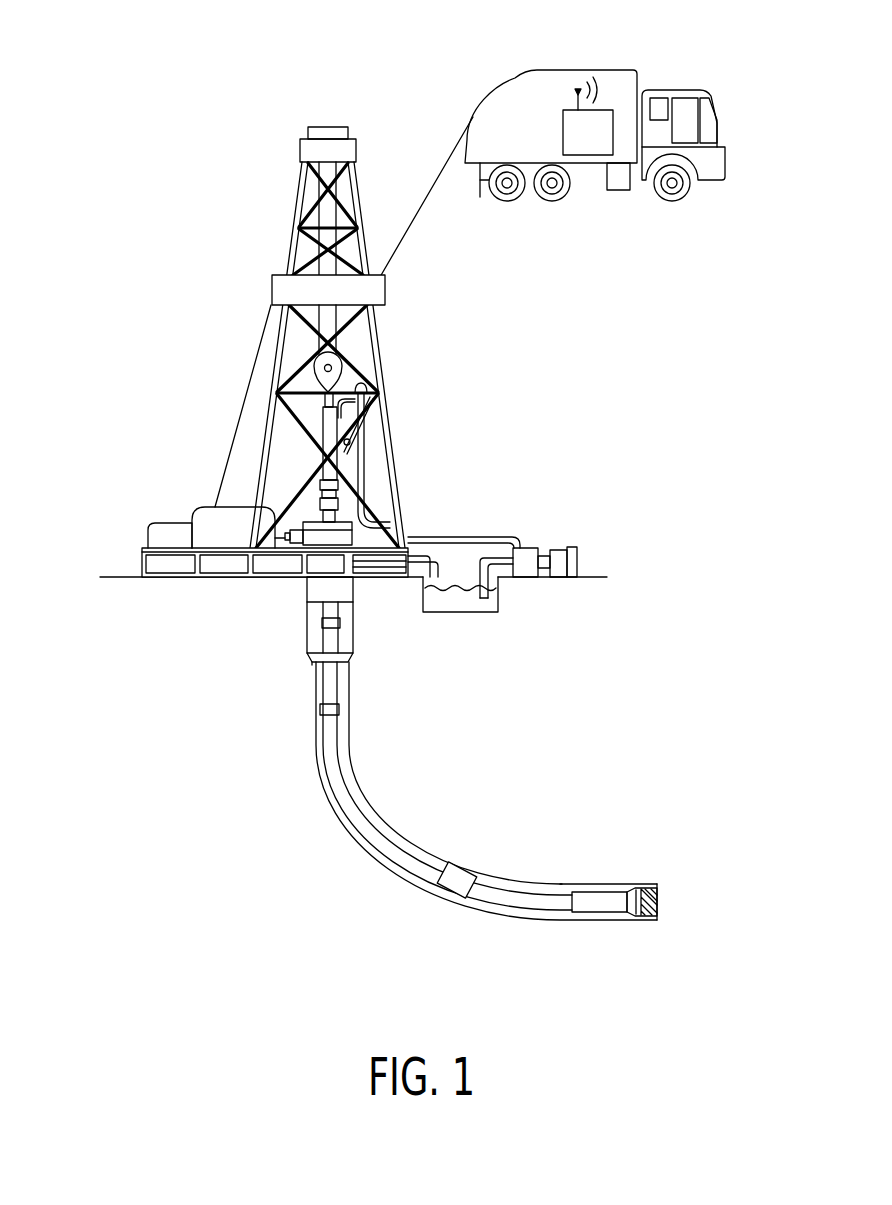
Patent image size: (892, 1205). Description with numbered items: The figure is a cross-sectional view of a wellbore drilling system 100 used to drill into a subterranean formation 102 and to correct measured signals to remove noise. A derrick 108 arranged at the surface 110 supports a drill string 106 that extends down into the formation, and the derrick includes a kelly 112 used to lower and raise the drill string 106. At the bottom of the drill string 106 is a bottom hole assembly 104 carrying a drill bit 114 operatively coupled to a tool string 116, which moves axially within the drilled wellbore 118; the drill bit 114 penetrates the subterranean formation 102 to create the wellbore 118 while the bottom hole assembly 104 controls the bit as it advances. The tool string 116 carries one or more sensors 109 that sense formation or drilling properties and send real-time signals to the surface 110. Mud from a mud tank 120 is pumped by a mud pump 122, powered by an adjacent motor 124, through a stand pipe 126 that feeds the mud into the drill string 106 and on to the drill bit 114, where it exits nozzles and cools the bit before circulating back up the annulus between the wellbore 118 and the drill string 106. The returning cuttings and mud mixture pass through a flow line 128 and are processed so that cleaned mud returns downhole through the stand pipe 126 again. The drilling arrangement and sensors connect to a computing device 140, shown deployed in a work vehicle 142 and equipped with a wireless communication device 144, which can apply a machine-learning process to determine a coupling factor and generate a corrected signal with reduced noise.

The wellbore drilling system 100 is at (565, 348).
The subterranean formation 102 is at (138, 753).
The bottom hole assembly 104 is at (598, 884).
The drill string 106 is at (336, 758).
The derrick 108 is at (270, 356).
The sensors 109 is at (450, 895).
The surface 110 is at (108, 573).
The kelly 112 is at (340, 370).
The drill bit 114 is at (660, 897).
The tool string 116 is at (527, 837).
The wellbore 118 is at (318, 737).
The mud tank 120 is at (468, 606).
The mud pump 122 is at (530, 549).
The motor 124 is at (560, 562).
The stand pipe 126 is at (370, 457).
The flow line 128 is at (437, 546).
The computing device 140 is at (566, 128).
The work vehicle 142 is at (718, 176).
The communication device 144 is at (589, 82).